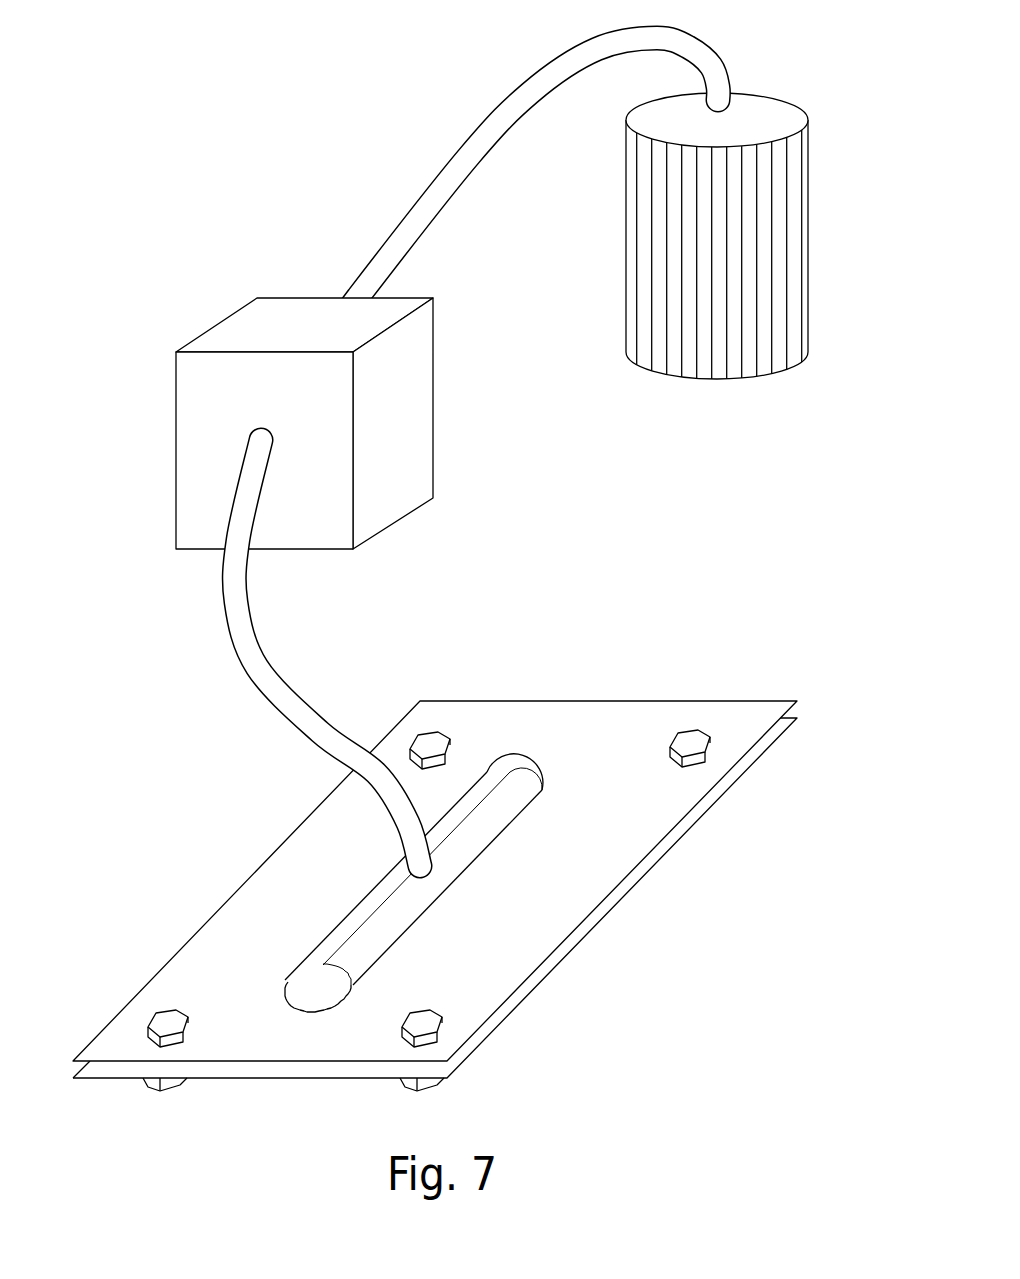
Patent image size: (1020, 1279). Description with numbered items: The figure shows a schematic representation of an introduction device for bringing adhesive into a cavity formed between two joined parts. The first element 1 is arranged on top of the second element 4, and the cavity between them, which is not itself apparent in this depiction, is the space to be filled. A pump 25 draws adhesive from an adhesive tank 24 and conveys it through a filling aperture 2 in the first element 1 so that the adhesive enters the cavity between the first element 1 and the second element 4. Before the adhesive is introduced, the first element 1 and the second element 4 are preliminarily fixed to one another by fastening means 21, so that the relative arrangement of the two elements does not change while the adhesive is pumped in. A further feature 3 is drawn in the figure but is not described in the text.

The first element 1 is at (625, 718).
The filling aperture 2 is at (410, 873).
The groove 3 is at (377, 908).
The second element 4 is at (668, 847).
The fastening means 21 is at (427, 740).
The adhesive tank 24 is at (773, 265).
The pump 25 is at (418, 410).